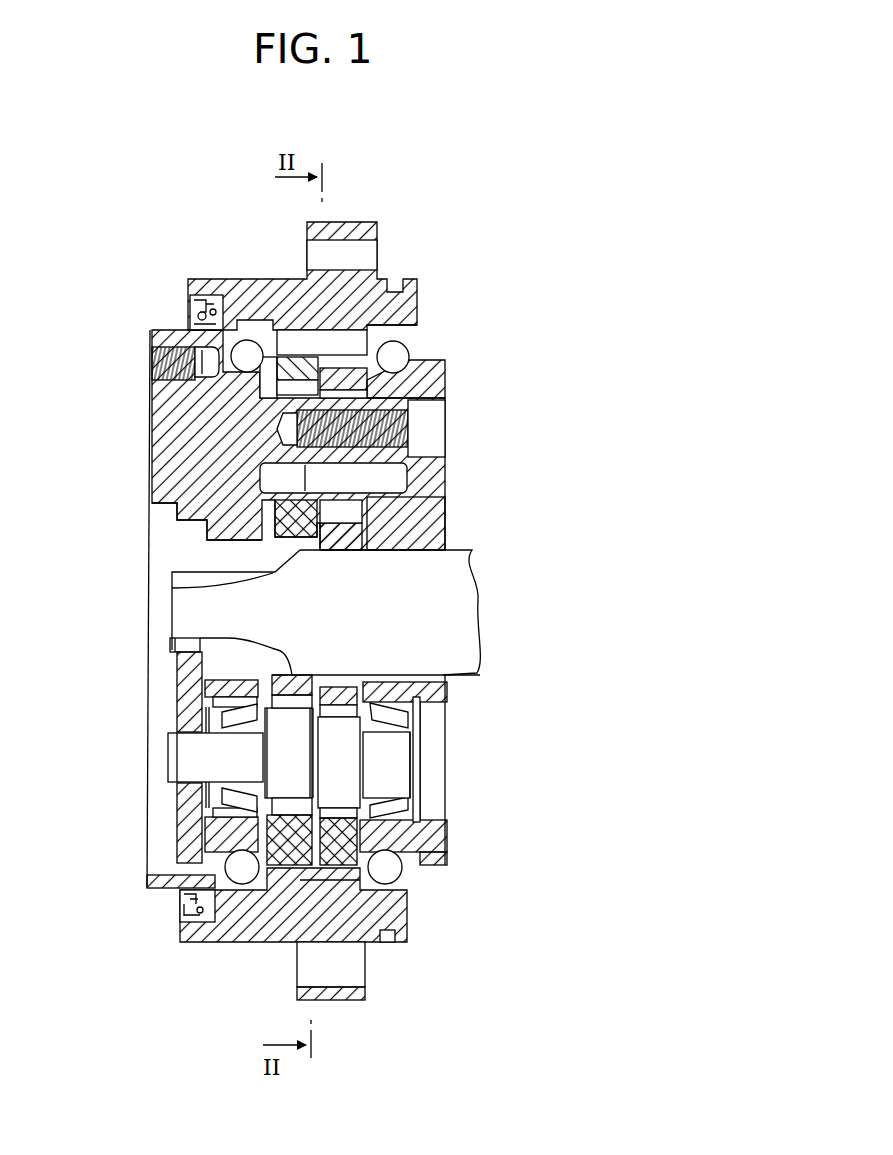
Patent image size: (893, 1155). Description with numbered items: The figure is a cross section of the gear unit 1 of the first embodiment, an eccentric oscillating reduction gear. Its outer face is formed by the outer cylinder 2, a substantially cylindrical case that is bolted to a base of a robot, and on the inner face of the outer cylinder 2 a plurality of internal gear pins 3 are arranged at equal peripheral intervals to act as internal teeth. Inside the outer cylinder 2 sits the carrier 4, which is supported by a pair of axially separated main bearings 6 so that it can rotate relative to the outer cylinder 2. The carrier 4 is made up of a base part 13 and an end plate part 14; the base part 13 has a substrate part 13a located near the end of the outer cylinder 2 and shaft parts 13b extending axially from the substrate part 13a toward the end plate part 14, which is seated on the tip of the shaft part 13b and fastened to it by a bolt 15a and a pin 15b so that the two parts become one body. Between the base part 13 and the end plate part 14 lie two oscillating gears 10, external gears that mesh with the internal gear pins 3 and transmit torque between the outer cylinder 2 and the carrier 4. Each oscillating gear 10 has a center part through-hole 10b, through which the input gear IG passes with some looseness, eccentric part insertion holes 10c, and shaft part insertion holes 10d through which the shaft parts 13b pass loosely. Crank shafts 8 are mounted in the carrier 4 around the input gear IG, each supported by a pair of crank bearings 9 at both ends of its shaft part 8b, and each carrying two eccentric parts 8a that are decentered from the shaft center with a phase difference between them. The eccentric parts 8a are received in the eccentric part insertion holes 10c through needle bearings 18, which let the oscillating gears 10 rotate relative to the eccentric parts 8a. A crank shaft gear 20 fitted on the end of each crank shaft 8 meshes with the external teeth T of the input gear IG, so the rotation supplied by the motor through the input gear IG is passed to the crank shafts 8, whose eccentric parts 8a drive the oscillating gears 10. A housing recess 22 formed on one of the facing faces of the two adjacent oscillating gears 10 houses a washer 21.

The gear unit 1 is at (357, 210).
The outer cylinder 2 is at (288, 292).
The internal gear pin 3 is at (345, 352).
The carrier 4 is at (177, 492).
The main bearing 6 is at (243, 357).
The crank shaft 8 is at (358, 760).
The eccentric part 8a is at (350, 712).
The shaft part 8b is at (416, 753).
The crank bearing 9 is at (420, 690).
The oscillating gear 10 is at (350, 836).
The center part through-hole 10b is at (343, 737).
The eccentric part insertion hole 10c is at (375, 786).
The shaft part insertion hole 10d is at (388, 526).
The base part 13 is at (175, 447).
The substrate part 13a is at (178, 406).
The shaft part 13b is at (395, 311).
The end plate part 14 is at (432, 387).
The bolt 15a is at (430, 424).
The pin 15b is at (398, 484).
The needle bearing 18 is at (397, 868).
The crank shaft gear 20 is at (190, 672).
The washer 21 is at (268, 888).
The housing recess 22 is at (368, 882).
The input gear IG is at (447, 579).
The external teeth T is at (193, 584).